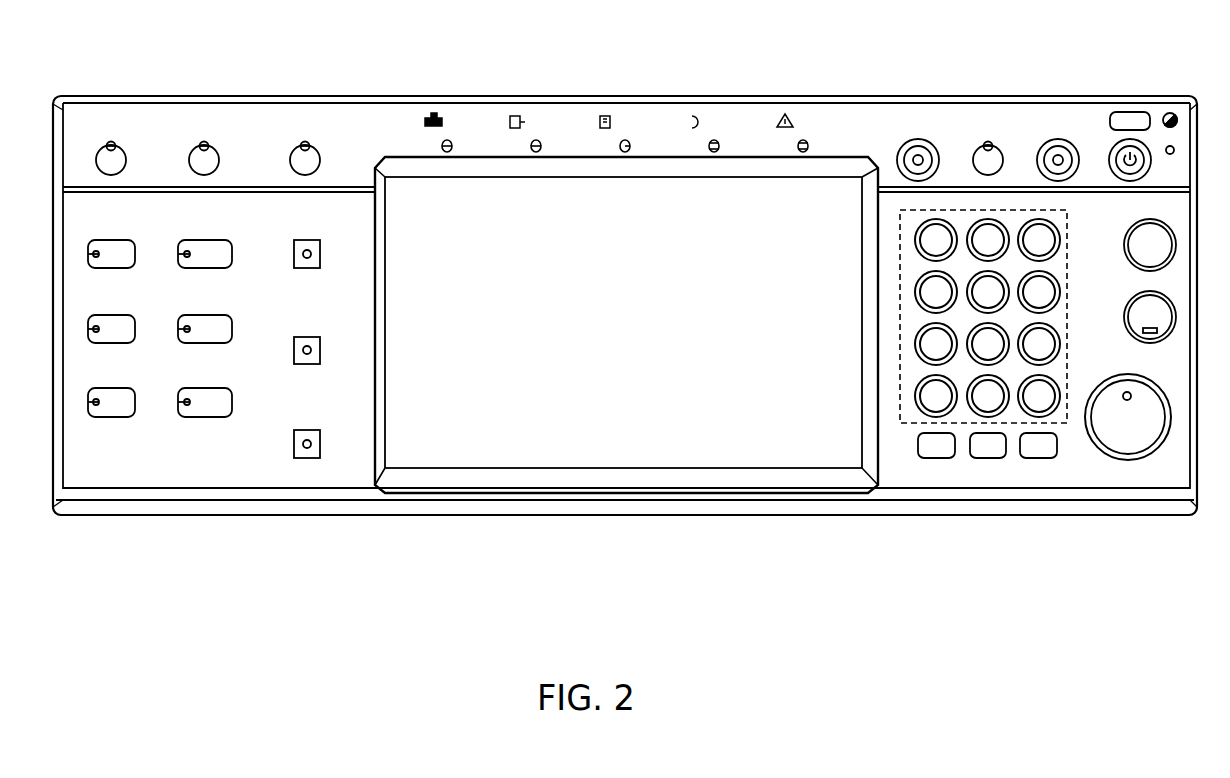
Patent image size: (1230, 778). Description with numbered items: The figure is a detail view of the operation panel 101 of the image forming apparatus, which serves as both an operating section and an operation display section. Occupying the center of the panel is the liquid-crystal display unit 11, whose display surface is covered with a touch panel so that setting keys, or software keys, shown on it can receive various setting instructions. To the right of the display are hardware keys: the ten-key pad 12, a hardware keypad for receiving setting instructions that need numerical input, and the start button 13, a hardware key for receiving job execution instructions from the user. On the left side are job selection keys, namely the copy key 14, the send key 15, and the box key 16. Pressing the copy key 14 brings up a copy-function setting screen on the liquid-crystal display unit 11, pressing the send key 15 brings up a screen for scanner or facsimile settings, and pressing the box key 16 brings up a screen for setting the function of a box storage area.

The operation panel 101 is at (56, 90).
The liquid-crystal display unit 11 is at (586, 445).
The ten-key pad 12 is at (906, 423).
The start button 13 is at (1126, 445).
The copy key 14 is at (224, 262).
The send key 15 is at (224, 337).
The box key 16 is at (224, 412).